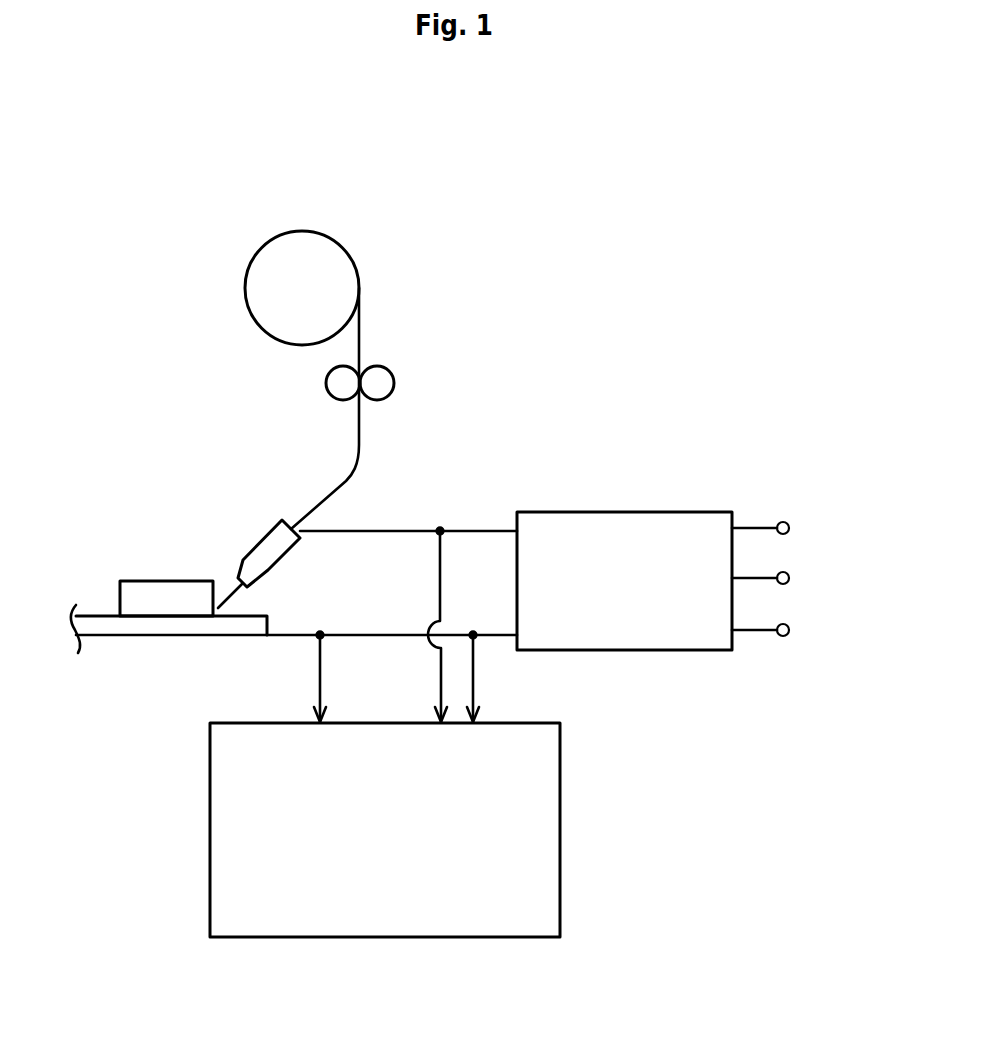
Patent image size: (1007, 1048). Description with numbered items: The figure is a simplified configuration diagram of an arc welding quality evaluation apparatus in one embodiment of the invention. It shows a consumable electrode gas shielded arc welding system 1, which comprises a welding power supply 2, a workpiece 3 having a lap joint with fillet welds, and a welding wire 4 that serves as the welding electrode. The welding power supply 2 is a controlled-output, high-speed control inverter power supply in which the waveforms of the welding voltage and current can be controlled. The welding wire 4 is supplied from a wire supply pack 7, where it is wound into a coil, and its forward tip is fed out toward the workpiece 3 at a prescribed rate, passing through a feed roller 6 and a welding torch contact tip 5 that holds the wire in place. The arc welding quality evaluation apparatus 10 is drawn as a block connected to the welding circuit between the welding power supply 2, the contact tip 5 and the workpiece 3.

The consumable electrode gas shielded arc welding system 1 is at (657, 345).
The welding power supply 2 is at (638, 511).
The workpiece 3 is at (144, 581).
The welding wire 4 is at (361, 328).
The welding torch contact tip 5 is at (258, 543).
The feed roller 6 is at (395, 382).
The wire supply pack 7 is at (298, 231).
The arc welding quality evaluation apparatus 10 is at (562, 829).